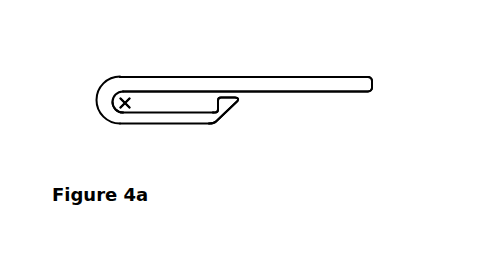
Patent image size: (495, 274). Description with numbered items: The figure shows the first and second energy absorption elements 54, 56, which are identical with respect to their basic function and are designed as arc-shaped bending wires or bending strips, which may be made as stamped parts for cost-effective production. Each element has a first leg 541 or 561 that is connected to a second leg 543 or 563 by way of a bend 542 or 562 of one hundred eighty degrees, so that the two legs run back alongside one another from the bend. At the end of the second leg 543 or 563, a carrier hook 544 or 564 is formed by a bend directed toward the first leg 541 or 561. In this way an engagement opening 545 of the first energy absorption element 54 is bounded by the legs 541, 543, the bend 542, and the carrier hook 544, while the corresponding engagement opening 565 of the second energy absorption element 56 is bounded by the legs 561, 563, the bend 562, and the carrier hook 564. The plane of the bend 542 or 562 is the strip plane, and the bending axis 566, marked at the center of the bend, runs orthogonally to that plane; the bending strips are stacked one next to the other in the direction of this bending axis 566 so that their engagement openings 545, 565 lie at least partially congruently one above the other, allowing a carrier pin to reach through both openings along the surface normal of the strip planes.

The first energy absorption element 54 is at (196, 98).
The second energy absorption element 56 is at (226, 98).
The first leg 541 is at (322, 85).
The bend 542 is at (100, 102).
The second leg 543 is at (165, 123).
The carrier hook 544 is at (229, 106).
The engagement opening 545 is at (147, 100).
The first leg 561 is at (343, 85).
The bend 562 is at (107, 103).
The second leg 563 is at (178, 121).
The carrier hook 564 is at (230, 108).
The engagement opening 565 is at (157, 102).
The bending axis 566 is at (117, 111).